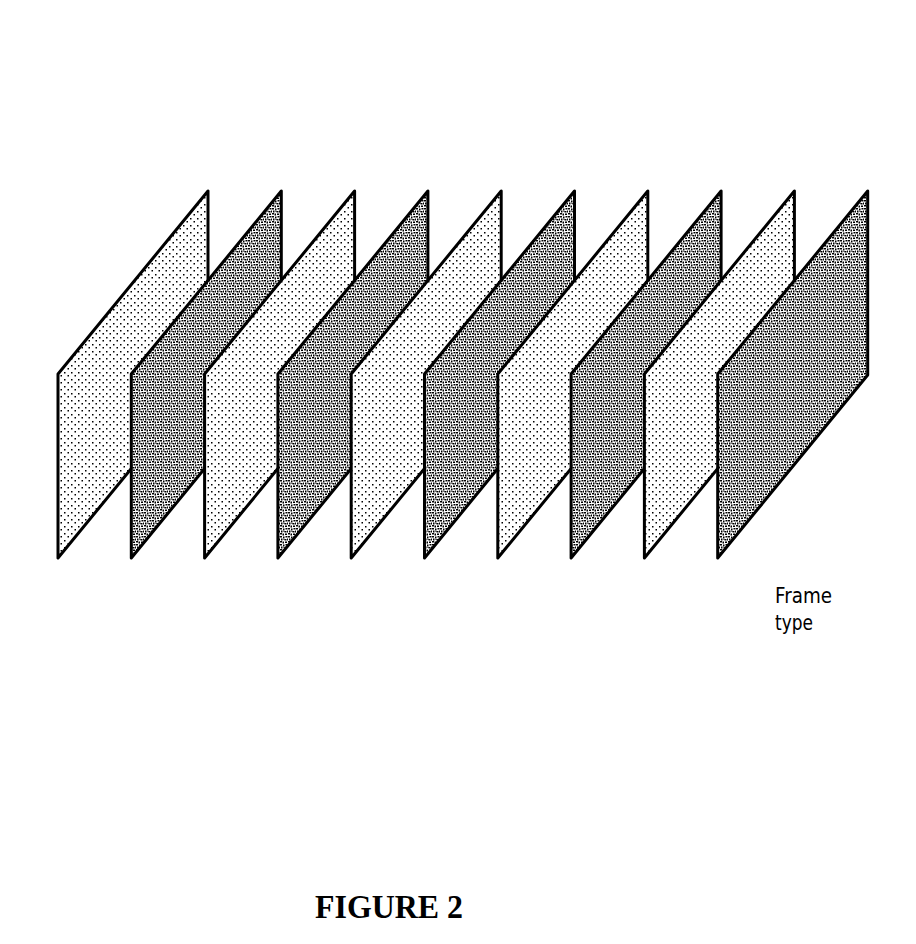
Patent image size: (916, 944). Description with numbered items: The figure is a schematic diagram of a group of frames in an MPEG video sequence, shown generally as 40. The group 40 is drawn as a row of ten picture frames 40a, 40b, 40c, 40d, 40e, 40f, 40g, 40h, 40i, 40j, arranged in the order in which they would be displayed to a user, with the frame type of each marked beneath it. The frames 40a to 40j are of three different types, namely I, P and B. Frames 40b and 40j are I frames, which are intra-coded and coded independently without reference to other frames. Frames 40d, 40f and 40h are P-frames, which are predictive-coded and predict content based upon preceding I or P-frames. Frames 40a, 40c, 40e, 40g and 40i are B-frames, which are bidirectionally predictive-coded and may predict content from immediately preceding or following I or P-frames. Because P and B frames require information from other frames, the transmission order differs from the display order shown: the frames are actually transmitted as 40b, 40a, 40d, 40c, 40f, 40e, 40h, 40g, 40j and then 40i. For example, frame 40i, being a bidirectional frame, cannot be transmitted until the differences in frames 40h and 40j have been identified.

The group of frames 40 is at (672, 141).
The frame 40a is at (63, 693).
The frame 40b is at (127, 693).
The frame 40c is at (204, 693).
The frame 40d is at (283, 693).
The frame 40e is at (346, 693).
The frame 40f is at (424, 693).
The frame 40g is at (488, 693).
The frame 40h is at (566, 693).
The frame 40i is at (646, 693).
The frame 40j is at (724, 693).